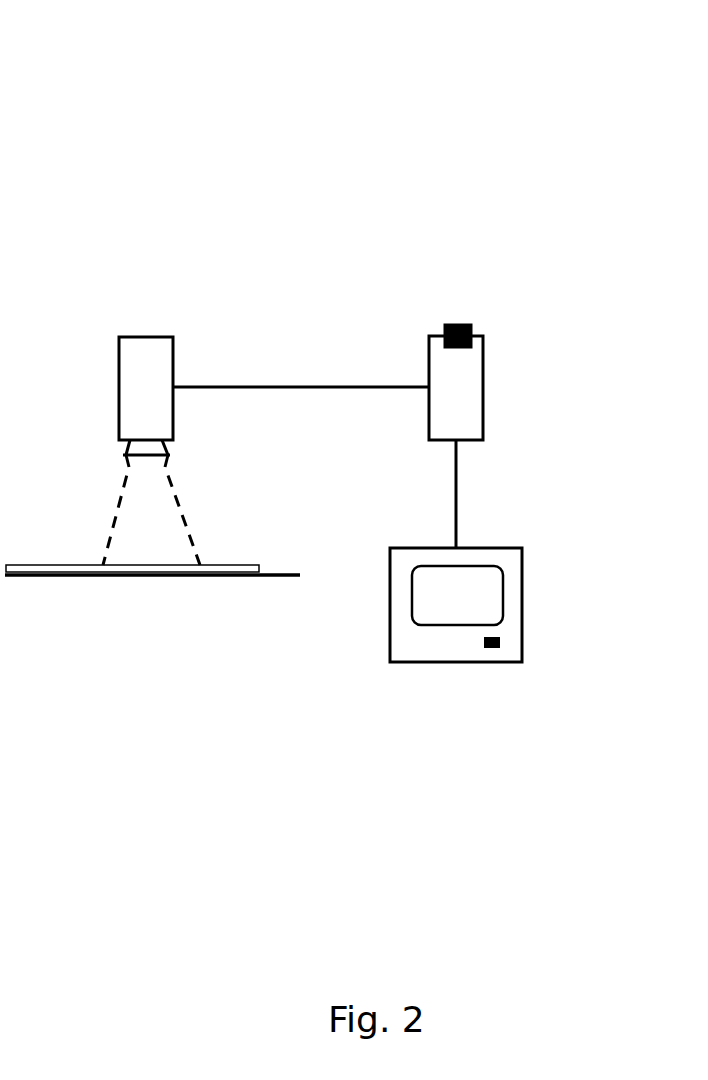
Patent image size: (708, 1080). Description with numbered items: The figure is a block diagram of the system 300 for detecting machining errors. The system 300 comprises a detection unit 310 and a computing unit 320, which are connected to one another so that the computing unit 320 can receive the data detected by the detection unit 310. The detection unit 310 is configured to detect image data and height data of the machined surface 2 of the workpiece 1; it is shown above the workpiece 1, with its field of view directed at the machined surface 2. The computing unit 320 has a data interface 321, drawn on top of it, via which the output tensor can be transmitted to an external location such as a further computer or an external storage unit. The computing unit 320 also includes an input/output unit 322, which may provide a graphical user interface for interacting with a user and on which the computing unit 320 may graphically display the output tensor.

The system for detecting machining errors 300 is at (412, 53).
The detection unit 310 is at (174, 360).
The computing unit 320 is at (485, 372).
The data interface 321 is at (463, 326).
The input/output unit 322 is at (508, 548).
The machined surface 2 is at (38, 565).
The workpiece 1 is at (272, 574).